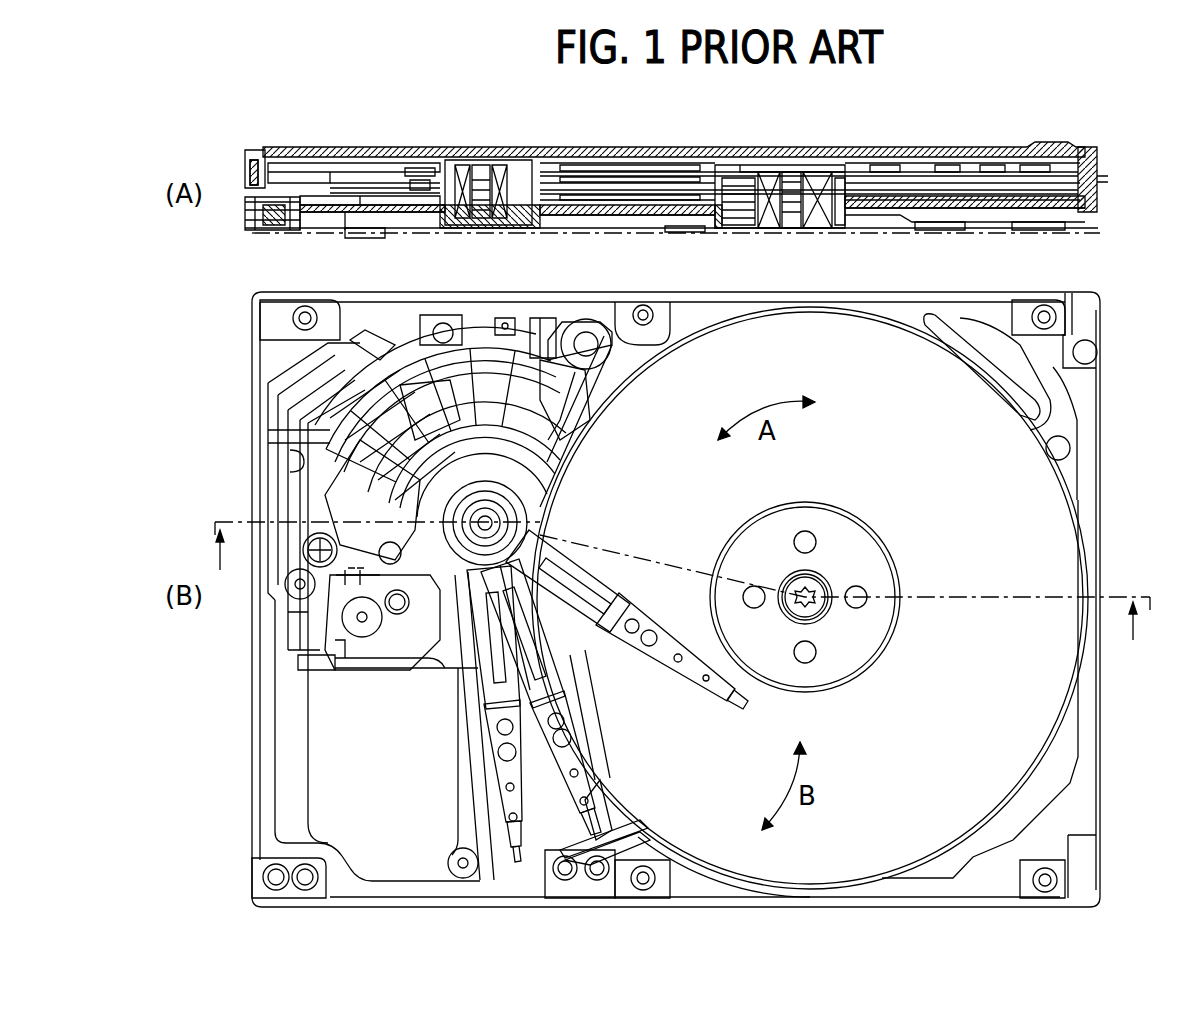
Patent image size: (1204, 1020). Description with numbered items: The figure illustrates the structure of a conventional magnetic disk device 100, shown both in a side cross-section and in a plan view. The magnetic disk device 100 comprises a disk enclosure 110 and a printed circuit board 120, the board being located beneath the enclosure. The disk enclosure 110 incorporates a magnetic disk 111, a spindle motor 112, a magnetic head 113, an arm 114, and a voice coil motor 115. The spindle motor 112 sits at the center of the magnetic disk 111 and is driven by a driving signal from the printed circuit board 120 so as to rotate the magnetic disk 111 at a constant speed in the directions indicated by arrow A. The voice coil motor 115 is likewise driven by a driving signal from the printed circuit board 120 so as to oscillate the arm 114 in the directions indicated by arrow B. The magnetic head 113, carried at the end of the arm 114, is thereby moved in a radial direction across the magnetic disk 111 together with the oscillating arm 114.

The magnetic disk device 100 is at (320, 131).
The disk enclosure 110 is at (1058, 228).
The magnetic disk 111 is at (1102, 180).
The spindle motor 112 is at (812, 232).
The magnetic head 113 is at (732, 698).
The arm 114 is at (648, 665).
The voice coil motor 115 is at (497, 150).
The printed circuit board 120 is at (377, 236).